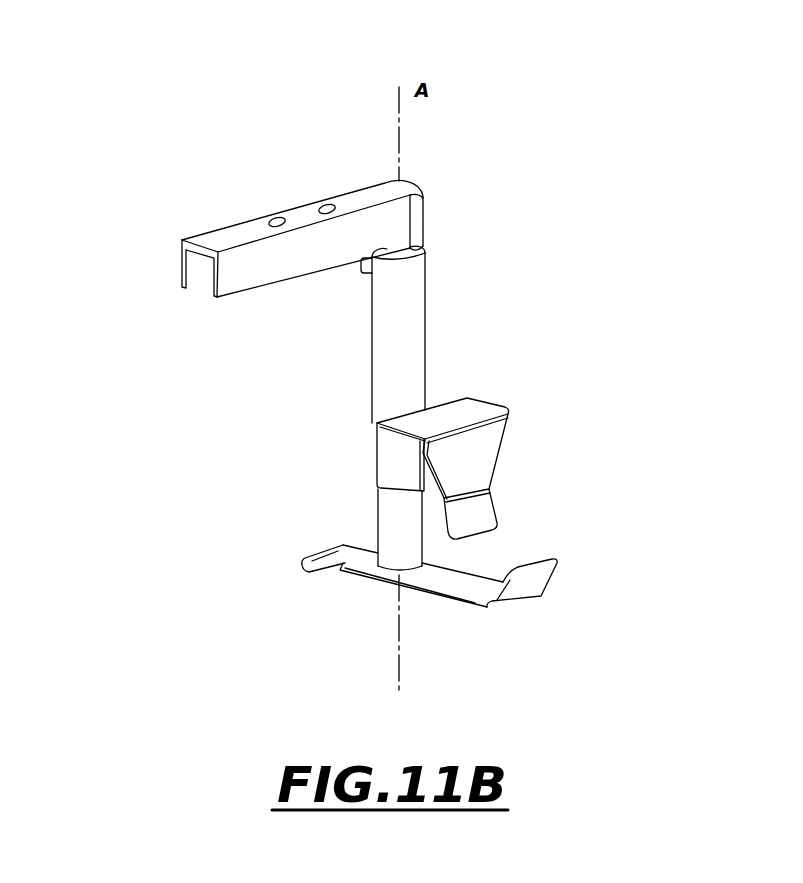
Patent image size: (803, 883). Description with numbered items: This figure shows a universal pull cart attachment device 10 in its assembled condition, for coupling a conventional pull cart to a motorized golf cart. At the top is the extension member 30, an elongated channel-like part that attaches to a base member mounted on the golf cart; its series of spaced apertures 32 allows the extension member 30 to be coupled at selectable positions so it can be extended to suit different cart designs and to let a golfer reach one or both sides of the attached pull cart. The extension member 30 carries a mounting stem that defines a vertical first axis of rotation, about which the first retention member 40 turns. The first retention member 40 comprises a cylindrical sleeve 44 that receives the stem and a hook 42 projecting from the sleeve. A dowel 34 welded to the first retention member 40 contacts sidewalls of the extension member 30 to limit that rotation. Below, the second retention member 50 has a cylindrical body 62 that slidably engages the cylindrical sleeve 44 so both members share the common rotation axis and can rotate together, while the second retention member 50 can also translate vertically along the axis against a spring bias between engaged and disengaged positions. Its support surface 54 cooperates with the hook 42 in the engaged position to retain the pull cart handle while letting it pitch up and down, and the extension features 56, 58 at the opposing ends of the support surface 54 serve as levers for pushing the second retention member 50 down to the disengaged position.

The attachment device 10 is at (696, 100).
The extension member 30 is at (208, 176).
The spaced apertures 32 is at (327, 204).
The dowel 34 is at (362, 269).
The first retention member 40 is at (507, 317).
The cylindrical sleeve 44 is at (411, 278).
The hook 42 is at (498, 428).
The cylindrical body 62 is at (392, 518).
The second retention member 50 is at (257, 519).
The support surface 54 is at (470, 584).
The extension feature 56 is at (317, 566).
The extension feature 58 is at (551, 580).